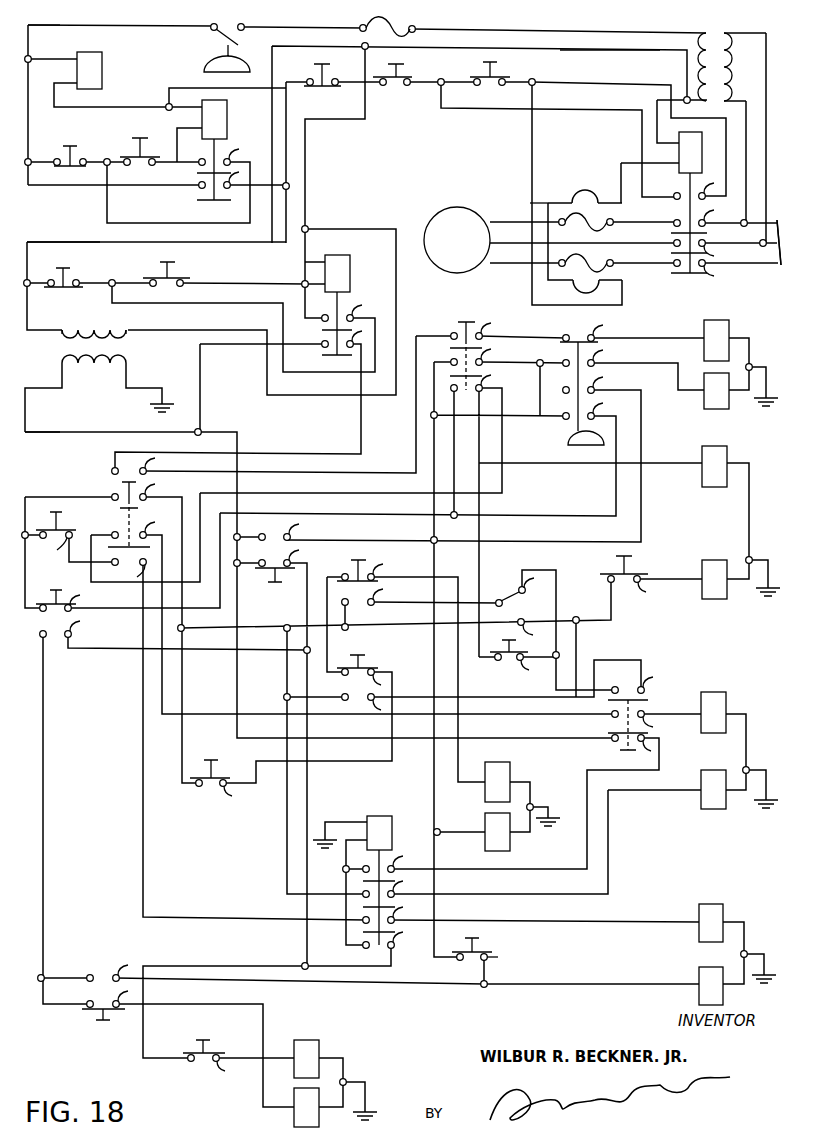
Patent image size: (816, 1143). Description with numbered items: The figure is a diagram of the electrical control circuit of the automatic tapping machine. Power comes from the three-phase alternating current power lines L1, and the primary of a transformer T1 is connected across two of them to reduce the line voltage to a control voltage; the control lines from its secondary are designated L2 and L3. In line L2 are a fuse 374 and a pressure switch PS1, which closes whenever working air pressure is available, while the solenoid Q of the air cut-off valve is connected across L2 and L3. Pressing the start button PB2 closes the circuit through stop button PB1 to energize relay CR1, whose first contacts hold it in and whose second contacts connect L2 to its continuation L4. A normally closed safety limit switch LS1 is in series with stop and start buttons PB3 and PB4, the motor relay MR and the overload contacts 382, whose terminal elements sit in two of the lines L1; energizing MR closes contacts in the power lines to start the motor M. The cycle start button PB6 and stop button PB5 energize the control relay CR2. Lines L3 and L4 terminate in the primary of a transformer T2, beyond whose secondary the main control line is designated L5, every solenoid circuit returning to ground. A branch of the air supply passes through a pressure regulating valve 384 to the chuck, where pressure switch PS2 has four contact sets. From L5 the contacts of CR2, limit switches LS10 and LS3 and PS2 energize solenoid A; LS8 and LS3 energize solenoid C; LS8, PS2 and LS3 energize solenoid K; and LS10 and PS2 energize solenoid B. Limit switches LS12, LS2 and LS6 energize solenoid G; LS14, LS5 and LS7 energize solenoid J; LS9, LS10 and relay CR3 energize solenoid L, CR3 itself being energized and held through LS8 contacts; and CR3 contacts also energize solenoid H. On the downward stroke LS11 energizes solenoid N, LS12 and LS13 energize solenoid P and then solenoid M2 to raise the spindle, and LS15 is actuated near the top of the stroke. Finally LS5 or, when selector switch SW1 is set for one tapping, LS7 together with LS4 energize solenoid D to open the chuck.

The control line L2 is at (28, 30).
The pressure switch PS1 is at (212, 62).
The solenoid Q is at (89, 70).
The push button switch PB1 is at (70, 146).
The push button switch PB2 is at (134, 140).
The relay CR1 is at (220, 130).
The fuse 374 is at (395, 28).
The limit switch LS1 is at (314, 68).
The stop push button switch PB3 is at (398, 76).
The start push button switch PB4 is at (494, 76).
The control line L3 is at (614, 50).
The transformer T1 is at (710, 36).
The motor relay MR is at (697, 208).
The overload circuit breaking contacts 382 is at (588, 196).
The pressure regulating valve 384 is at (595, 222).
The power lines L1 is at (778, 224).
The motor M is at (457, 240).
The control line L4 is at (90, 240).
The stop button PB5 is at (66, 272).
The cycle start button PB6 is at (178, 272).
The control relay CR2 is at (366, 274).
The transformer T2 is at (66, 356).
The main control line L5 is at (44, 432).
The limit switch LS3 is at (460, 328).
The pressure switch PS2 is at (576, 336).
The solenoid A is at (716, 340).
The solenoid B is at (716, 391).
The solenoid C is at (714, 466).
The solenoid D is at (714, 579).
The limit switch LS10 is at (115, 484).
The limit switch LS9 is at (66, 537).
The limit switch LS12 is at (58, 594).
The limit switch LS8 is at (277, 560).
The limit switch LS7 is at (358, 560).
The selector switch SW1 is at (505, 596).
The limit switch LS4 is at (628, 568).
The limit switch LS2 is at (506, 644).
The limit switch LS5 is at (360, 660).
The limit switch LS6 is at (624, 744).
The solenoid G is at (713, 712).
The solenoid H is at (713, 789).
The limit switch LS14 is at (206, 768).
The solenoid J is at (497, 782).
The solenoid K is at (497, 832).
The relay CR3 is at (380, 824).
The solenoid L is at (711, 923).
The solenoid M2 is at (711, 986).
The limit switch LS15 is at (476, 948).
The limit switch LS13 is at (100, 1012).
The limit switch LS11 is at (203, 1046).
The solenoid N is at (306, 1059).
The solenoid P is at (306, 1107).